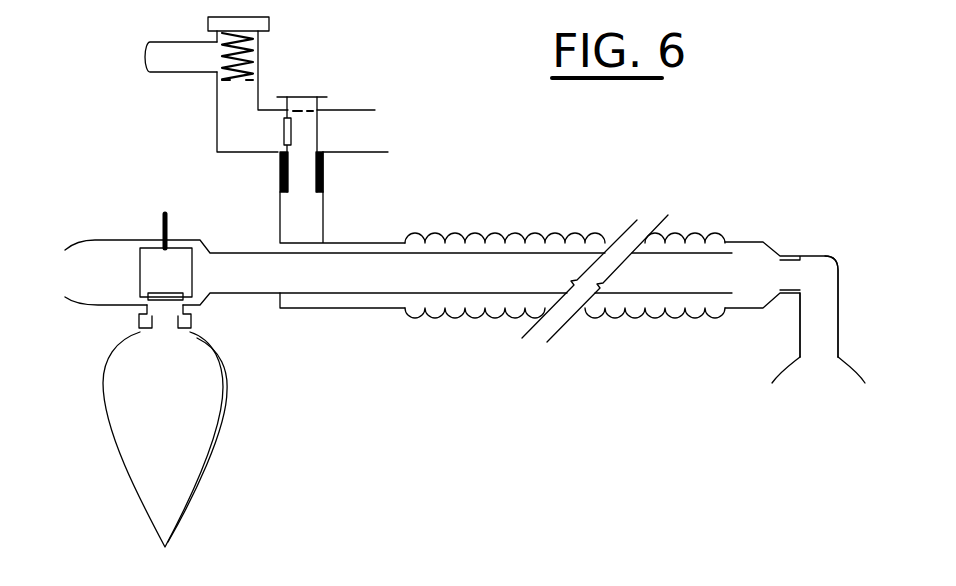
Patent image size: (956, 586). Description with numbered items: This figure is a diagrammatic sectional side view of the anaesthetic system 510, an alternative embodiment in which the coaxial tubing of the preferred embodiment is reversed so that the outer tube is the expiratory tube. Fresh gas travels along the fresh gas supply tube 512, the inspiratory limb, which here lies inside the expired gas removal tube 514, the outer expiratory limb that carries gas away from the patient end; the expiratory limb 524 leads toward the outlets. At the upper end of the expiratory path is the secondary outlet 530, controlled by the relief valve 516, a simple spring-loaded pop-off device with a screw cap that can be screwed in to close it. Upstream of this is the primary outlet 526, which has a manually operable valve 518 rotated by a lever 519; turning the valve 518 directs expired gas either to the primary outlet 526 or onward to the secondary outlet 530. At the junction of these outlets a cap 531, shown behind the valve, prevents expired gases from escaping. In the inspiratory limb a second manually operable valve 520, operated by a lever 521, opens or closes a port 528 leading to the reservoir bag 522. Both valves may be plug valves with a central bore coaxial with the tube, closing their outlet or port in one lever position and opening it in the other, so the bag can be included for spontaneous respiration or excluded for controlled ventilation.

The anaesthetic system 510 is at (507, 358).
The fresh gas supply tube 512 is at (495, 267).
The expired gas removal tube 514 is at (433, 320).
The relief valve 516 is at (238, 82).
The manually operable valve 518 is at (318, 128).
The lever 519 is at (304, 97).
The second manually operable valve 520 is at (150, 255).
The lever 521 is at (167, 211).
The reservoir bag 522 is at (203, 430).
The expired gas removal tube 524 is at (820, 357).
The primary outlet 526 is at (362, 130).
The port 528 is at (165, 316).
The secondary outlet 530 is at (165, 58).
The cap 531 is at (326, 158).